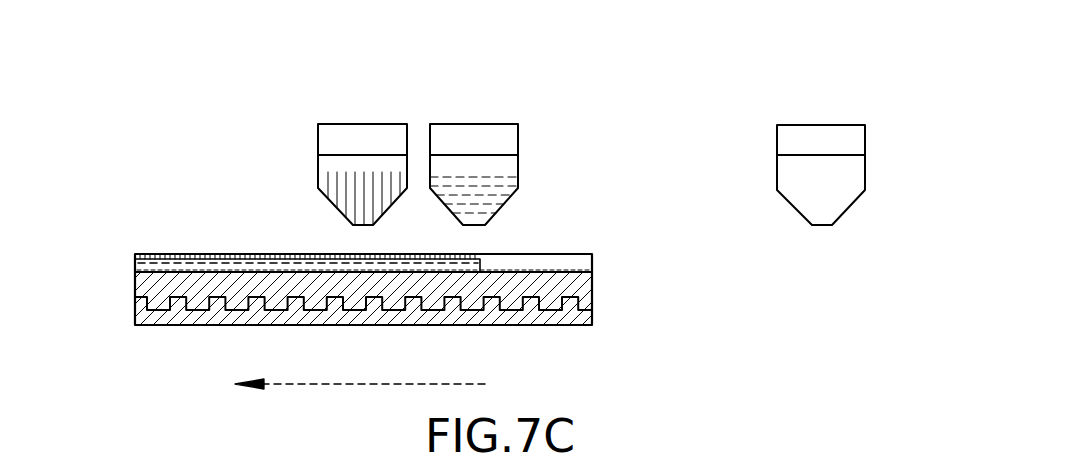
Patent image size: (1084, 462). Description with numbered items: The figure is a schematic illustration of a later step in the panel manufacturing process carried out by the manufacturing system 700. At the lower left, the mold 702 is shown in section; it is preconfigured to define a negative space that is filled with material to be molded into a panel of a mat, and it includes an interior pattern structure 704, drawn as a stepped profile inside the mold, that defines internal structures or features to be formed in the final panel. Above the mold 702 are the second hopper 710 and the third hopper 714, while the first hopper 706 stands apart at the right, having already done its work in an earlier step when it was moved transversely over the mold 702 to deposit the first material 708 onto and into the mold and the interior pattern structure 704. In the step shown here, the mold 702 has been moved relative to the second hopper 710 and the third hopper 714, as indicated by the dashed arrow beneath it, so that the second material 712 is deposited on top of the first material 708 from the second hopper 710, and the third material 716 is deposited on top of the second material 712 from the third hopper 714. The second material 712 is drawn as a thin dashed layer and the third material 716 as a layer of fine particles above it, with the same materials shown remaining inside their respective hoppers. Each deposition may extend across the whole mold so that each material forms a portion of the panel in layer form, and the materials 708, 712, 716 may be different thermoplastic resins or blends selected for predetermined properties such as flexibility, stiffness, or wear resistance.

The manufacturing system 700 is at (160, 207).
The mold 702 is at (194, 325).
The interior pattern structure 704 is at (492, 312).
The first material 708 is at (293, 313).
The third material 716 is at (247, 257).
The second material 712 is at (152, 267).
The third hopper 714 is at (362, 124).
The second hopper 710 is at (477, 124).
The first hopper 706 is at (777, 142).